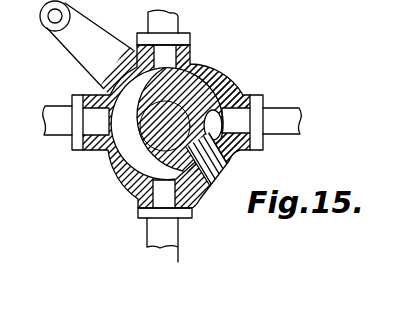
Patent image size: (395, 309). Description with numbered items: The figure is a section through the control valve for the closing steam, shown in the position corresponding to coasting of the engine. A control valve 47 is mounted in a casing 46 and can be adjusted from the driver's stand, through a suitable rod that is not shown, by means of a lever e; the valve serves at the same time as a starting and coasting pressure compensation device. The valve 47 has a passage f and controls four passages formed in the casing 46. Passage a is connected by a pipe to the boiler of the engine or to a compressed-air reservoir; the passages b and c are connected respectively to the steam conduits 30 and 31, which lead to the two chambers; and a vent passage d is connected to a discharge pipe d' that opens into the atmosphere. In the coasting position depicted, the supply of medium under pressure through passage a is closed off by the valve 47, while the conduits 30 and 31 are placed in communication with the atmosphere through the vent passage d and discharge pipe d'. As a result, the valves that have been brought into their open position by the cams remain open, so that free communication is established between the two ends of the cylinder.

The lever e is at (72, 45).
The steam conduit 30 is at (57, 102).
The passage b is at (90, 127).
The casing 46 is at (111, 168).
The passage a is at (167, 53).
The control valve 47 is at (192, 80).
The discharge pipe d' is at (282, 106).
The vent passage d is at (255, 126).
The passage f is at (215, 155).
The passage c is at (170, 200).
The steam conduit 31 is at (172, 231).